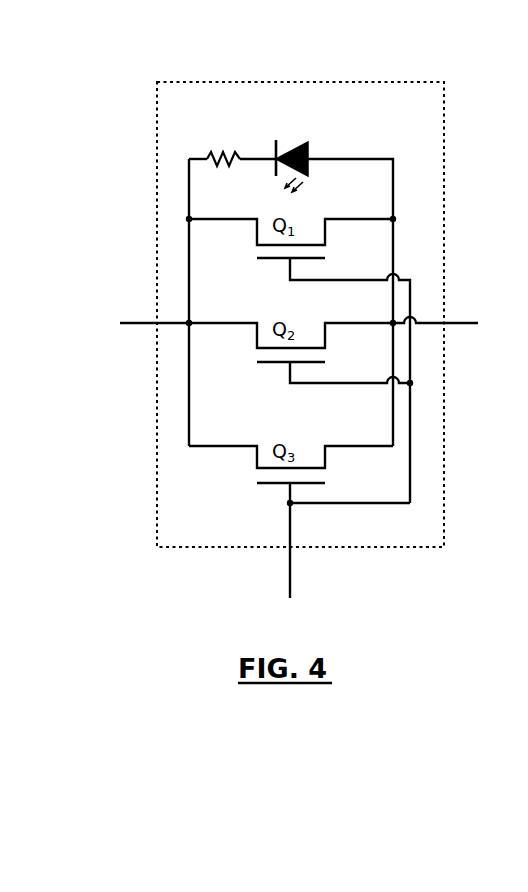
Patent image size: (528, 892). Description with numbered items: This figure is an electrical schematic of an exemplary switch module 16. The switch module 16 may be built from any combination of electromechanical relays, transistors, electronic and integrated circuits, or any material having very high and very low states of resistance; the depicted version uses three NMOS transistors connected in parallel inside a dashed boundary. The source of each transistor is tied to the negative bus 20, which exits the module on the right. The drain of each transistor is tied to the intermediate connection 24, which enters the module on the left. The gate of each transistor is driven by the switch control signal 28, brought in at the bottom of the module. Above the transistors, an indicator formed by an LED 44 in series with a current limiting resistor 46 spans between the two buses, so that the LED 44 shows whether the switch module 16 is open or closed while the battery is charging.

The switch module 16 is at (157, 113).
The negative bus 20 is at (458, 323).
The intermediate connection 24 is at (136, 323).
The switch control signal 28 is at (290, 575).
The LED 44 is at (276, 141).
The current limiting resistor 46 is at (214, 152).